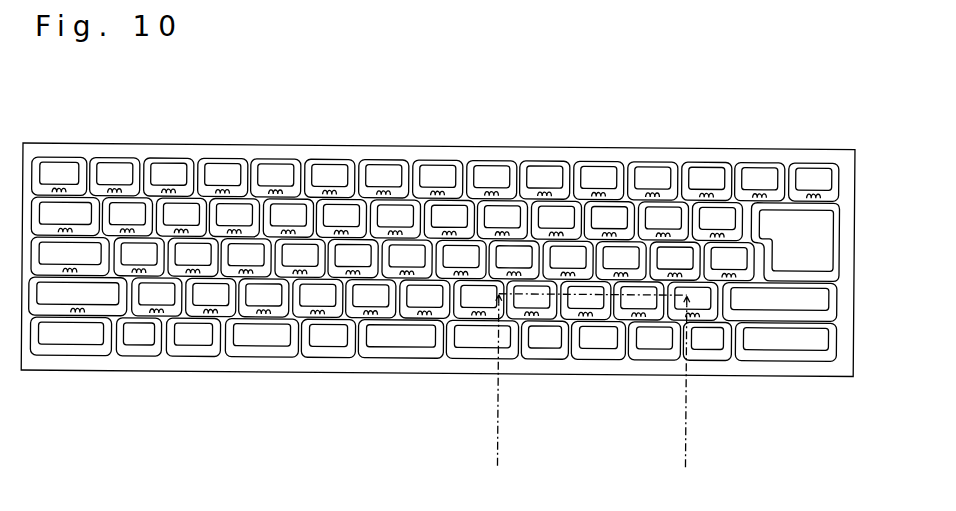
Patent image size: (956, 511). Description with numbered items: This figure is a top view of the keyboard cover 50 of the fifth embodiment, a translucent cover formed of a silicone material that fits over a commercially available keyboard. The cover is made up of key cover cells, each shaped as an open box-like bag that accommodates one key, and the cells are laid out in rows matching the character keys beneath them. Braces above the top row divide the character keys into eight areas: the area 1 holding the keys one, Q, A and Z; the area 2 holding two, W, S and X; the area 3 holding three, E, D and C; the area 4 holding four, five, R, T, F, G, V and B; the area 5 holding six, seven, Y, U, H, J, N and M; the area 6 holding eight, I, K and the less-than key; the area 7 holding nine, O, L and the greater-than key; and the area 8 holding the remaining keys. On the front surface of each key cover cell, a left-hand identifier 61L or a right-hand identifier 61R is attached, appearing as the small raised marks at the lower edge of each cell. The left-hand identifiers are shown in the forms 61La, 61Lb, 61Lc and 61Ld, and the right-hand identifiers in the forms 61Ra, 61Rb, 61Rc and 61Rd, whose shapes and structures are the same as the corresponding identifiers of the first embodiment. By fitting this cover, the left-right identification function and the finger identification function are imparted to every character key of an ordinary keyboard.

The keyboard cover 50 is at (799, 119).
The area 1 is at (80, 140).
The area 2 is at (133, 140).
The area 3 is at (186, 140).
The area 4 is at (345, 140).
The area 5 is at (350, 140).
The area 6 is at (505, 140).
The area 7 is at (510, 140).
The area 8 is at (720, 140).
The left-hand identifier 61L is at (440, 416).
The left-hand identifier 61La is at (147, 318).
The left-hand identifier 61Lb is at (207, 318).
The left-hand identifier 61Lc is at (265, 318).
The left-hand identifier 61Ld is at (318, 318).
The right-hand identifier 61R is at (790, 416).
The right-hand identifier 61Ra is at (472, 318).
The right-hand identifier 61Rb is at (535, 318).
The right-hand identifier 61Rc is at (592, 318).
The right-hand identifier 61Rd is at (650, 318).